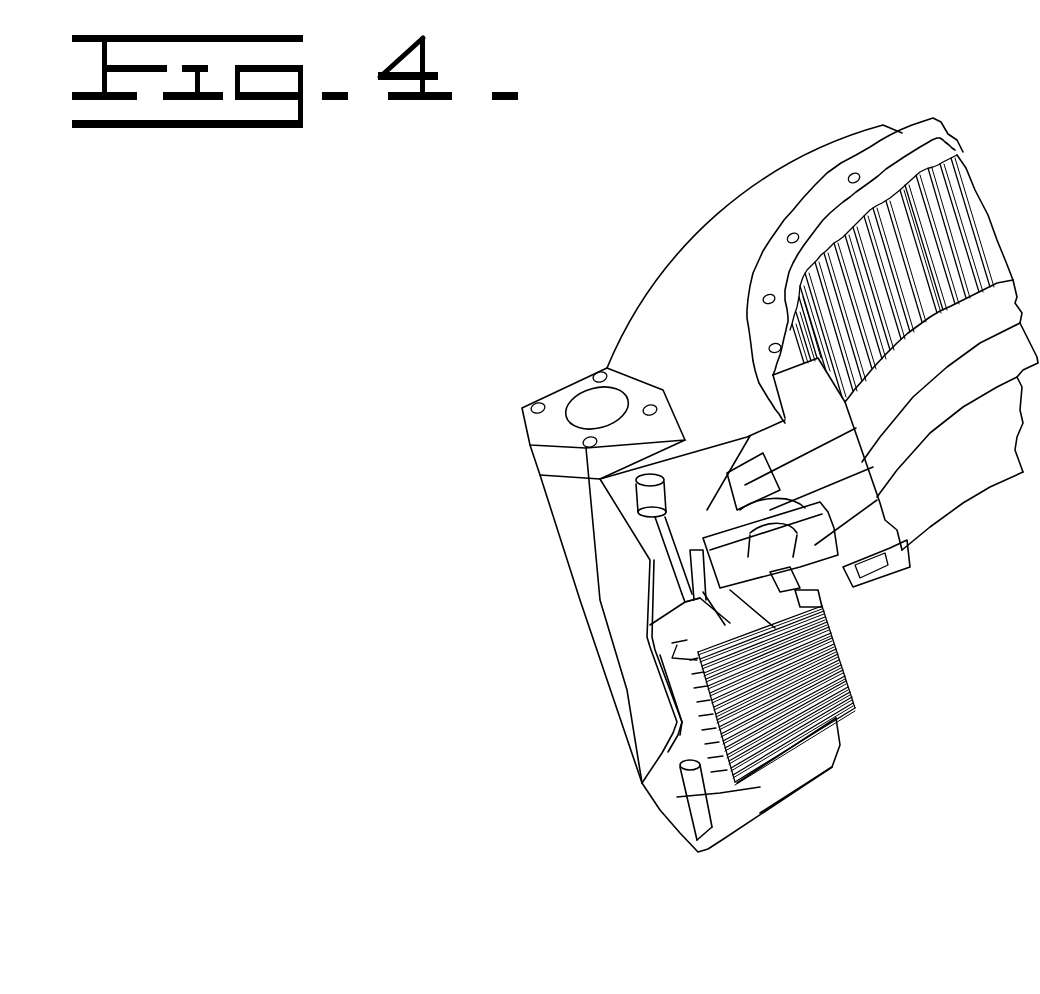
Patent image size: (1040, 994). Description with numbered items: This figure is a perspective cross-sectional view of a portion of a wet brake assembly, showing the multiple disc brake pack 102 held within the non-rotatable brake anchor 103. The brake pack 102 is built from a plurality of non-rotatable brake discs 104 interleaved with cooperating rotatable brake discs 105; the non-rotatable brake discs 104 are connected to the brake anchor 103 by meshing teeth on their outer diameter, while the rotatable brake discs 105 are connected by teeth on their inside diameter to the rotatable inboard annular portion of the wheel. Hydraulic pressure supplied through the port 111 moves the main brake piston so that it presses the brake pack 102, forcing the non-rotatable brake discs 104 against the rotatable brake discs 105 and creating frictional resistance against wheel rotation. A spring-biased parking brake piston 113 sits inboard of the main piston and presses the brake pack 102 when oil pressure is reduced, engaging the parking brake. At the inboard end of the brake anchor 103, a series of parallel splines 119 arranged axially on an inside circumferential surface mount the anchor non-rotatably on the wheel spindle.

The multiple disc brake pack 102 is at (858, 718).
The brake anchor 103 is at (740, 196).
The non-rotatable brake discs 104 is at (750, 770).
The rotatable brake discs 105 is at (843, 657).
The port 111 is at (657, 570).
The parking brake piston 113 is at (812, 533).
The parallel splines 119 is at (937, 183).